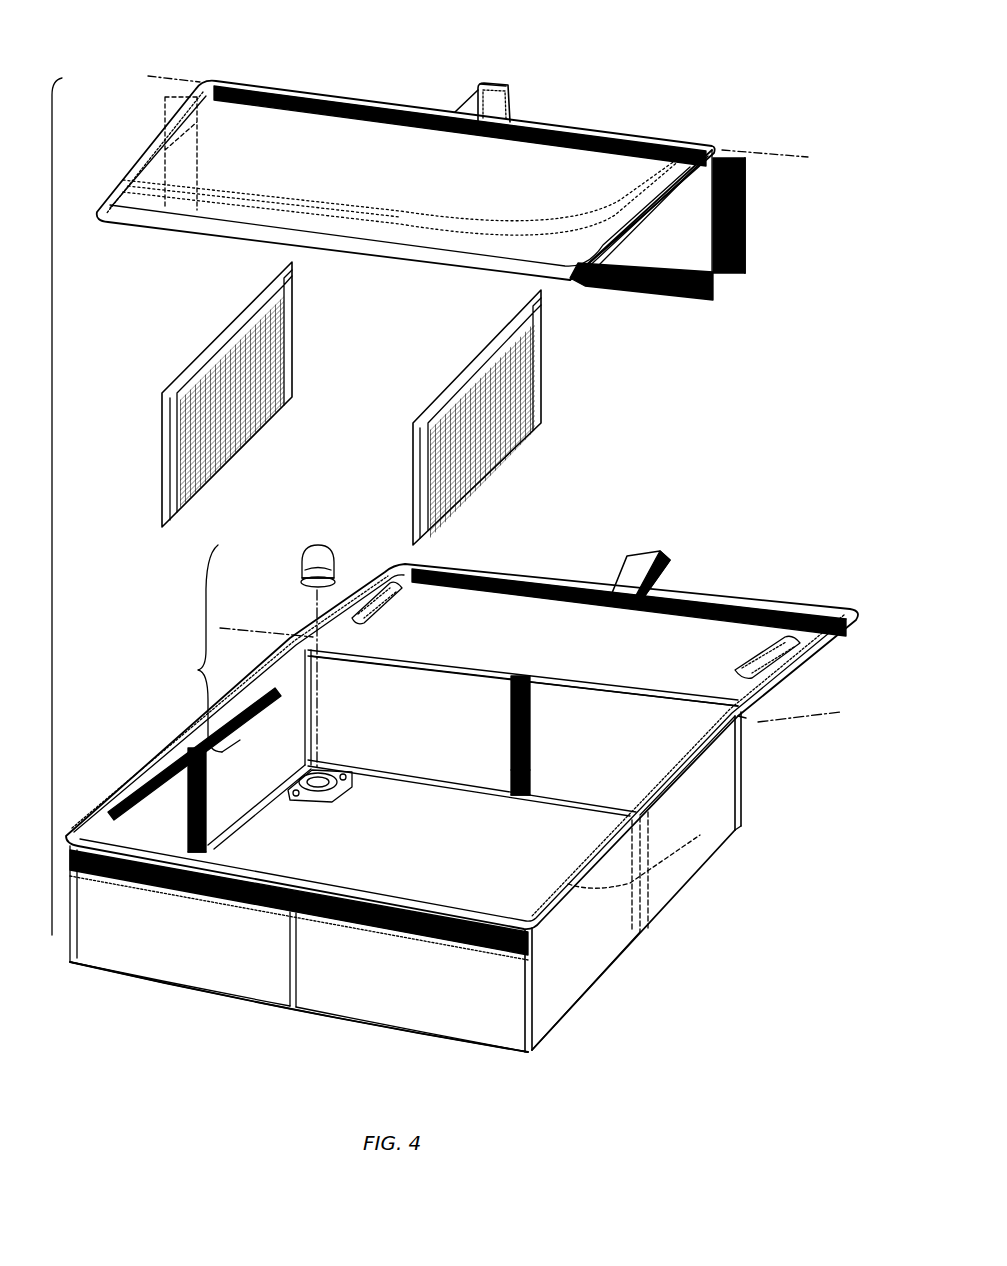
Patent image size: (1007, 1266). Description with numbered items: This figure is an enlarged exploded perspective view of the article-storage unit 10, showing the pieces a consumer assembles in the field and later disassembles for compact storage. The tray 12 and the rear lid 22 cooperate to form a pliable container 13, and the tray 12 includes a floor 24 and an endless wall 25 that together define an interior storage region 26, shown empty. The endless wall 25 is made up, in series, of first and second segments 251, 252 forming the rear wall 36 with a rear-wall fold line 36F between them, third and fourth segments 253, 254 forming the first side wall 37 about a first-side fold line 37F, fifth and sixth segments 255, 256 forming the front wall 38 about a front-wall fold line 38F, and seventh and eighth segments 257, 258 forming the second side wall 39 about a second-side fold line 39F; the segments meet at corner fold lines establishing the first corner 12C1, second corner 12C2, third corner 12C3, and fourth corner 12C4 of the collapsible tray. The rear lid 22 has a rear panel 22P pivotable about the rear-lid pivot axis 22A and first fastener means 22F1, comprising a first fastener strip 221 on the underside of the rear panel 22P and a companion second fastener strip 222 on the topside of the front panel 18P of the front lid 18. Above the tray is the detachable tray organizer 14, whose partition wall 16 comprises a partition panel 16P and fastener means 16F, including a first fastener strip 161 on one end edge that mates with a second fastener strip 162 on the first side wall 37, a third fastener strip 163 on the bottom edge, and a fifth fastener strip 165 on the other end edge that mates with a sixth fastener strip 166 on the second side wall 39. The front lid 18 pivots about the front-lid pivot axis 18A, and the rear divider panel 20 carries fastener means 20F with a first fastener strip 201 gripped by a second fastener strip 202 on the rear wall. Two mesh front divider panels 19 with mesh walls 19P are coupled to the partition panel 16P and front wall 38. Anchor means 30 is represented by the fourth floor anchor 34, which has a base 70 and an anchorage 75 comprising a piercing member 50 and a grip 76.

The article-storage unit 10 is at (785, 74).
The tray 12 is at (712, 800).
The first corner 12C1 is at (742, 772).
The second corner 12C2 is at (518, 1010).
The third corner 12C3 is at (60, 940).
The fourth corner 12C4 is at (314, 706).
The container 13 is at (815, 812).
The detachable tray organizer 14 is at (290, 85).
The partition wall 16 is at (702, 300).
The partition panel 16P is at (748, 202).
The fastener means 16F is at (752, 243).
The first fastener strip 161 is at (724, 158).
The second fastener strip 162 is at (588, 868).
The third fastener strip 163 is at (622, 168).
The fifth fastener strip 165 is at (168, 115).
The sixth fastener strip 166 is at (228, 800).
The front lid 18 is at (228, 143).
The front-lid pivot axis 18A is at (166, 78).
The front panel 18P is at (247, 165).
The front divider panel 19 is at (296, 351).
The mesh 19P is at (250, 425).
The rear divider panel 20 is at (466, 100).
The first fastener strip 201 is at (502, 84).
The second fastener strip 202 is at (510, 765).
The rear divider-panel fastener means 20F is at (562, 42).
The rear lid 22 is at (798, 590).
The rear-lid pivot axis 22A is at (262, 633).
The rear panel 22P is at (708, 640).
The first fastener means 22F1 is at (684, 428).
The first fastener strip 221 is at (590, 578).
The second fastener strip 222 is at (647, 292).
The floor 24 is at (422, 804).
The endless wall 25 is at (540, 990).
The first segment 251 is at (411, 682).
The second segment 252 is at (634, 714).
The third segment 253 is at (687, 795).
The fourth segment 254 is at (586, 986).
The fifth segment 255 is at (412, 1007).
The sixth segment 256 is at (180, 962).
The seventh segment 257 is at (194, 764).
The eighth segment 258 is at (261, 733).
The interior storage region 26 is at (742, 724).
The anchor means 30 is at (172, 640).
The fourth floor anchor 34 is at (192, 648).
The rear wall 36 is at (572, 715).
The rear-wall fold line 36F is at (512, 758).
The first side wall 37 is at (588, 950).
The first-side fold line 37F is at (662, 848).
The front wall 38 is at (180, 952).
The front-wall fold line 38F is at (288, 962).
The second side wall 39 is at (283, 702).
The second-side fold line 39F is at (218, 796).
The piercing member 50 is at (333, 583).
The base 70 is at (293, 765).
The anchorage 75 is at (296, 565).
The grip 76 is at (320, 548).